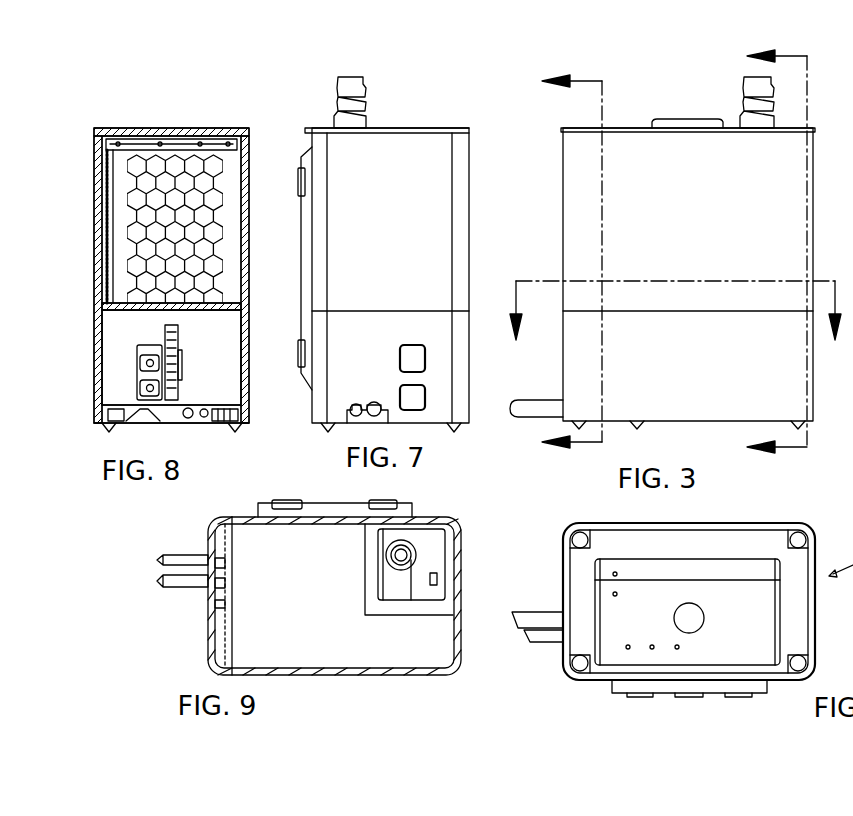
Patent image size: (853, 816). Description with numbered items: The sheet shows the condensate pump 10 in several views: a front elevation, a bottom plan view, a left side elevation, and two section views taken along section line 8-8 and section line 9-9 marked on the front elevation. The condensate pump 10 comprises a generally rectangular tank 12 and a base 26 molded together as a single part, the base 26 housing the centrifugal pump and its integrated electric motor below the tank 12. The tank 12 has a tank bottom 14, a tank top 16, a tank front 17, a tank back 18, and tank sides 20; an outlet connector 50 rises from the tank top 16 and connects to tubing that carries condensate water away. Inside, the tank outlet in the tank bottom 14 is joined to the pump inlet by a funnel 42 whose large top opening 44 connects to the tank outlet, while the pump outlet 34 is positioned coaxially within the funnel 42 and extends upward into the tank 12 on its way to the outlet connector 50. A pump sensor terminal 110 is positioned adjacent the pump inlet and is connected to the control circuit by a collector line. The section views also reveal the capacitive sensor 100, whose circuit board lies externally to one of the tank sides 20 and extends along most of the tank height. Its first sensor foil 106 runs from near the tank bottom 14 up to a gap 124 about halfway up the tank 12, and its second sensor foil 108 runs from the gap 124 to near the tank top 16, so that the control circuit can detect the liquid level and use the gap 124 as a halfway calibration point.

In FIG. 3, the section line 8- 8 is at (560, 261).
In FIG. 3, the section line 9- 9 is at (676, 324).
In FIG. 3, the condensate pump 10 is at (764, 250).
In FIG. 8, the tank 12 is at (103, 126).
In FIG. 7, the tank 12 is at (438, 125).
In FIG. 3, the tank 12 is at (626, 123).
In FIG. 8, the tank bottom 14 is at (131, 317).
In FIG. 9, the tank bottom 14 is at (386, 641).
In FIG. 8, the tank top 16 is at (201, 128).
In FIG. 7, the tank top 16 is at (383, 128).
In FIG. 3, the tank top 16 is at (644, 126).
In FIG. 7, the tank front 17 is at (471, 232).
In FIG. 3, the tank front 17 is at (778, 186).
In FIG. 9, the tank front 17 is at (322, 675).
In FIG. 9, the tank back 18 is at (247, 517).
In FIG. 7, the tank sides 20 is at (420, 160).
In FIG. 9, the tank sides 20 is at (212, 603).
In FIG. 8, the base 26 is at (94, 394).
In FIG. 7, the base 26 is at (315, 425).
In FIG. 3, the base 26 is at (636, 426).
In FIG. 9, the pump outlet 34 is at (405, 552).
In FIG. 9, the funnel 42 is at (450, 560).
In FIG. 9, the large top opening 44 is at (437, 542).
In FIG. 7, the outlet connector 50 is at (349, 77).
In FIG. 3, the outlet connector 50 is at (744, 80).
In FIG. 8, the capacitive sensor 100 is at (144, 148).
In FIG. 8, the first sensor foil 106 is at (136, 270).
In FIG. 8, the second sensor foil 108 is at (136, 185).
In FIG. 9, the pump sensor terminal 110 is at (436, 580).
In FIG. 8, the gap 124 is at (129, 228).